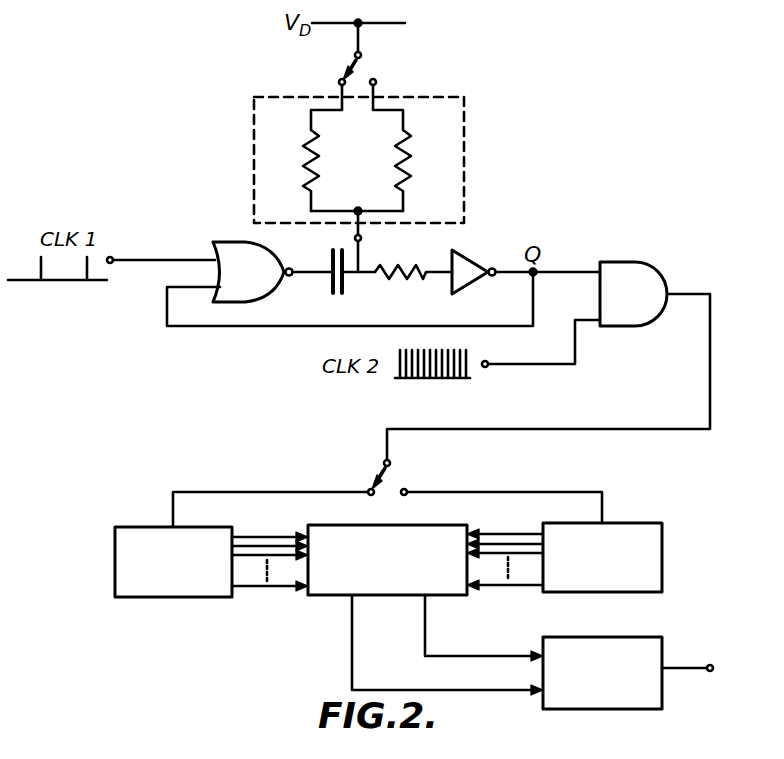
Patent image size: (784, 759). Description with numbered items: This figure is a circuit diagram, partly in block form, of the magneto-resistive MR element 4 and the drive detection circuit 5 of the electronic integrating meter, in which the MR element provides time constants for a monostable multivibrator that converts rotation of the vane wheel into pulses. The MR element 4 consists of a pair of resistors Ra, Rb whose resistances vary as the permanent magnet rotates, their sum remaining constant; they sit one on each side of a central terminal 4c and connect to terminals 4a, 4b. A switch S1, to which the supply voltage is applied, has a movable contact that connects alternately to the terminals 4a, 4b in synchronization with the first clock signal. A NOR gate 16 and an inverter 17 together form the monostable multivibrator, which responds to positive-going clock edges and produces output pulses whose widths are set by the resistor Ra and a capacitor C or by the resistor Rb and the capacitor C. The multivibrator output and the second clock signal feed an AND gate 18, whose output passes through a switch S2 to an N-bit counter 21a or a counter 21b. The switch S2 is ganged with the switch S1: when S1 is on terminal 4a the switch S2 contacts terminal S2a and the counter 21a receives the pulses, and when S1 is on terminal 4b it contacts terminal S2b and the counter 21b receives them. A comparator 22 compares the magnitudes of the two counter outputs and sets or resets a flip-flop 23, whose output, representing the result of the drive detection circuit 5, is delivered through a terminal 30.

The MR element 4 is at (374, 151).
The terminal 4a is at (339, 82).
The terminal 4b is at (376, 82).
The central terminal 4c is at (361, 238).
The drive detection circuit 5 is at (600, 227).
The NOR gate 16 is at (237, 242).
The inverter 17 is at (469, 265).
The AND gate 18 is at (660, 283).
The counter 21a is at (141, 525).
The counter 21b is at (636, 522).
The comparator 22 is at (325, 525).
The flip-flop 23 is at (640, 637).
The terminal 30 is at (710, 664).
The switch S1 is at (367, 64).
The switch S2 is at (396, 480).
The terminal S2a is at (366, 489).
The terminal S2b is at (408, 490).
The resistor Ra is at (305, 148).
The resistor Rb is at (411, 148).
The capacitor C is at (334, 286).